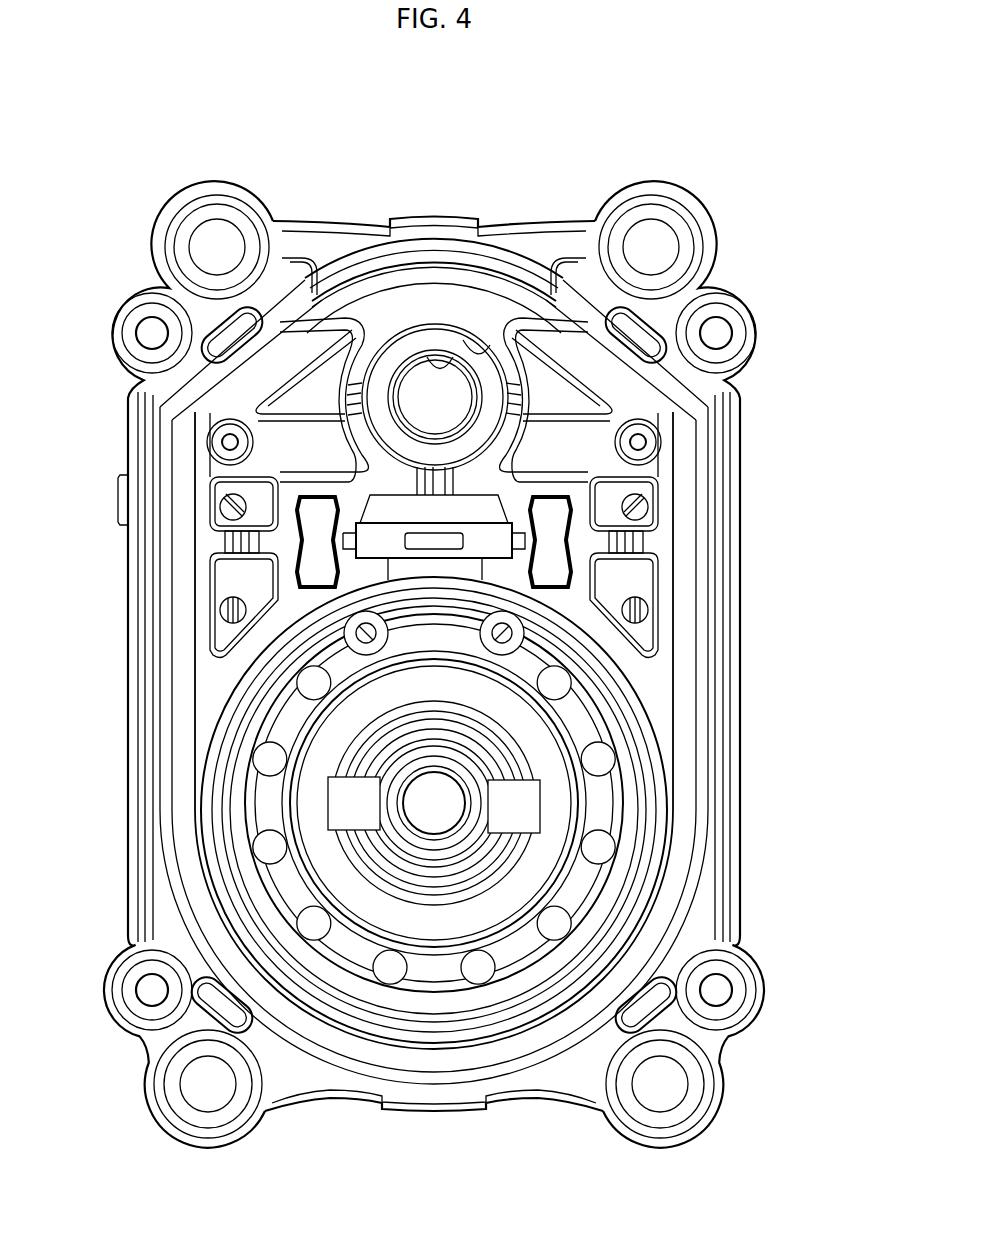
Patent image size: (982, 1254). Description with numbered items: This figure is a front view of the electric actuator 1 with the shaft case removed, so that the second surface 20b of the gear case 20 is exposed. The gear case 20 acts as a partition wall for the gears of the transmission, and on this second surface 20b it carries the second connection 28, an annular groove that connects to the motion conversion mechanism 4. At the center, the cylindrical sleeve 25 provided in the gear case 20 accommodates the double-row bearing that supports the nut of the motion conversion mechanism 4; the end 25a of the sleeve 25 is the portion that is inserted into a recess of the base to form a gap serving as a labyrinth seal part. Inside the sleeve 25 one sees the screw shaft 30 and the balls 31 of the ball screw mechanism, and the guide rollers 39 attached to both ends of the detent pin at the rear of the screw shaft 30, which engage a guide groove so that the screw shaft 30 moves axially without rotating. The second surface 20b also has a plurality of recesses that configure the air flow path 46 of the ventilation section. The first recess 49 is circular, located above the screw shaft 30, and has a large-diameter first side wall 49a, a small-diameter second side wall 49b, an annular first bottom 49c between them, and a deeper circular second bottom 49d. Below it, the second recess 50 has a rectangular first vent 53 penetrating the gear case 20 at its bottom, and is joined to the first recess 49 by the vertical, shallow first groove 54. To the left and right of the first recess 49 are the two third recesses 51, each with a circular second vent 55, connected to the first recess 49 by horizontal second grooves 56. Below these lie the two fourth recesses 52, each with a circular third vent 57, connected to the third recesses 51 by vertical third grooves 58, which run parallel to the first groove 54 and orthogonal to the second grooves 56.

The electric actuator 1 is at (758, 202).
The motion conversion mechanism 4 is at (434, 905).
The gear case 20 is at (160, 716).
The second surface 20b is at (210, 680).
The sleeve 25 is at (655, 725).
The end of the sleeve 25a is at (612, 678).
The second connection 28 is at (180, 755).
The screw shaft 30 is at (447, 813).
The balls 31 is at (385, 970).
The guide rollers 39 is at (340, 803).
The air flow path 46 is at (578, 418).
The first recess 49 is at (438, 292).
The first side wall 49a is at (477, 358).
The second side wall 49b is at (458, 350).
The first bottom 49c is at (420, 343).
The second bottom 49d is at (413, 375).
The second recess 50 is at (485, 540).
The third recesses 51 is at (295, 411).
The fourth recesses 52 is at (232, 580).
The first vent 53 is at (442, 545).
The first groove 54 is at (445, 480).
The second vent 55 is at (226, 500).
The second groove 56 is at (333, 390).
The third vent 57 is at (225, 618).
The third groove 58 is at (232, 542).